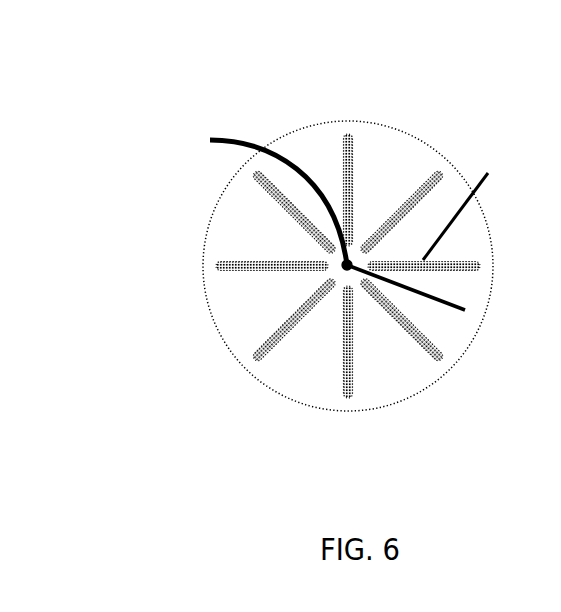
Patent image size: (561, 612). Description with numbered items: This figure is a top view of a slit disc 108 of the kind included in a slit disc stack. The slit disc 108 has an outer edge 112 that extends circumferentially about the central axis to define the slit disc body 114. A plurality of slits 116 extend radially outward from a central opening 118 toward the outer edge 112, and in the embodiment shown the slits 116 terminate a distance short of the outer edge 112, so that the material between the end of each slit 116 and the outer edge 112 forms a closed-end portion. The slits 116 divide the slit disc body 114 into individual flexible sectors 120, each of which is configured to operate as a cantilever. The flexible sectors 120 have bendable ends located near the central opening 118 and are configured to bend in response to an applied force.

The slit disc 108 is at (315, 125).
The outer edge 112 is at (220, 332).
The slit disc body 114 is at (382, 162).
The slit 116 is at (488, 173).
The central opening 118 is at (465, 310).
The flexible sector 120 is at (325, 258).